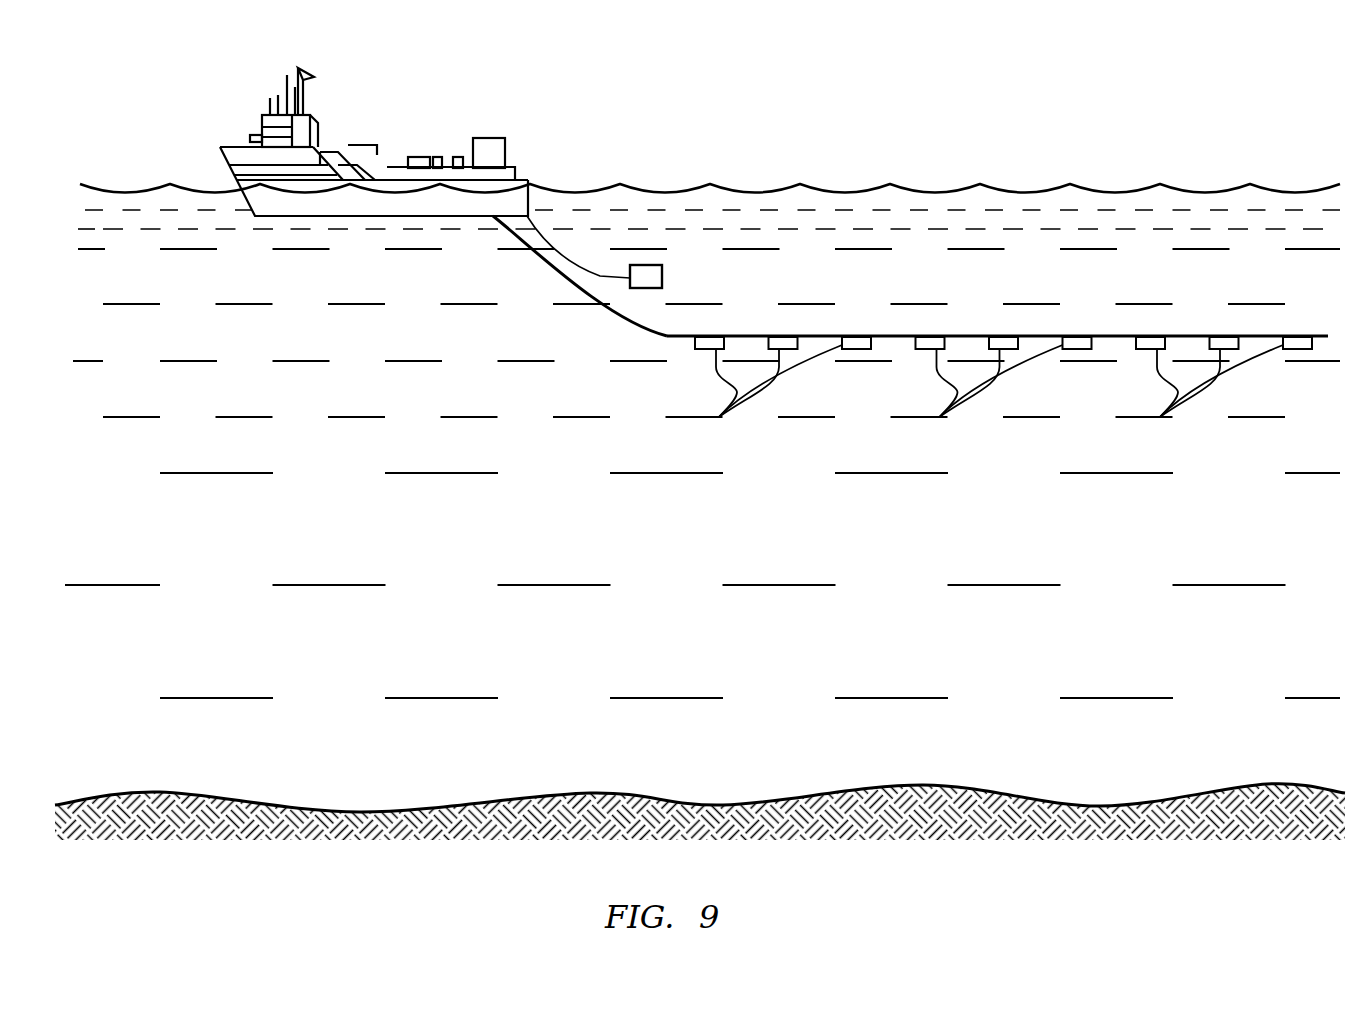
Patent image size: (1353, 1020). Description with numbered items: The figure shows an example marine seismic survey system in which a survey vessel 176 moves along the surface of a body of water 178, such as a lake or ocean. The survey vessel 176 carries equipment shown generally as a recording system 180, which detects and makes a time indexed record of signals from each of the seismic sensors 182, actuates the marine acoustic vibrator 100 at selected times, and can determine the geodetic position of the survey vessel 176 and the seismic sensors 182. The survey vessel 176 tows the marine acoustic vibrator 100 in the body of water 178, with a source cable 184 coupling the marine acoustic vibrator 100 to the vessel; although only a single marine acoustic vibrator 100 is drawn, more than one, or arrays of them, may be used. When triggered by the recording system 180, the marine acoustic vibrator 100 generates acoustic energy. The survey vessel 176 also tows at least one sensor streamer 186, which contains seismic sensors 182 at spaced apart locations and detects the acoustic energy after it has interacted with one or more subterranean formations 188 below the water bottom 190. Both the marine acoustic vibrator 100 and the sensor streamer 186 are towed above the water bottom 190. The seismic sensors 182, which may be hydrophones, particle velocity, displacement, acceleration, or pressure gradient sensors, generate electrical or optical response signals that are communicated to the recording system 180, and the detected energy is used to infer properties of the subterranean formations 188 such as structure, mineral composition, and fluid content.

The marine acoustic vibrator 100 is at (647, 265).
The survey vessel 176 is at (547, 190).
The body of water 178 is at (320, 347).
The recording system 180 is at (492, 138).
The seismic sensors 182 is at (719, 417).
The source cable 184 is at (578, 263).
The sensor streamer 186 is at (957, 336).
The subterranean formations 188 is at (1233, 882).
The water bottom 190 is at (1170, 797).